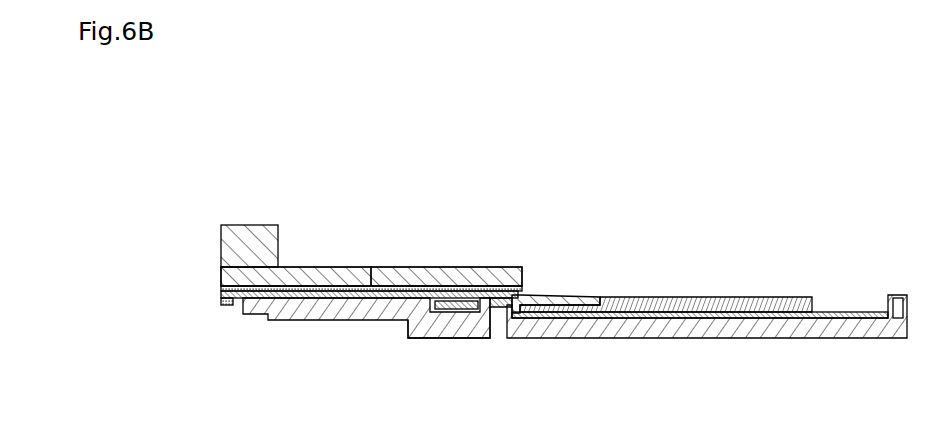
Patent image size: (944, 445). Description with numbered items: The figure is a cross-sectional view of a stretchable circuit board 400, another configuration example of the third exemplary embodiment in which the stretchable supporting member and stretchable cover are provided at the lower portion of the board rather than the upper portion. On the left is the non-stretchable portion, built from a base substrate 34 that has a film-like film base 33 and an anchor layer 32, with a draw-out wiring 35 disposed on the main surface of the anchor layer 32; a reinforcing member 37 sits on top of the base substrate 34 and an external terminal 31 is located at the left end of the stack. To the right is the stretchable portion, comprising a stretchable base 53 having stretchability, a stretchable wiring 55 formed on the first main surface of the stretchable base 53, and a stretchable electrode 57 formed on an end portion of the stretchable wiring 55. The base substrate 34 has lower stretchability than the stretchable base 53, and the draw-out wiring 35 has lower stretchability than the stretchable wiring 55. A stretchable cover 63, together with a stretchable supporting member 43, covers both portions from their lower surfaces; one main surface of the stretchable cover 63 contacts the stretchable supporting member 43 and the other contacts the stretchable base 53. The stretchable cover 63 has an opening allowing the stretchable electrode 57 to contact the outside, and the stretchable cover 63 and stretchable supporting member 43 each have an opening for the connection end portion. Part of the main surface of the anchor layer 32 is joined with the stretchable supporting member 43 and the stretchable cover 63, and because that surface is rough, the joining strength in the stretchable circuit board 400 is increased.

The stretchable circuit board 400 is at (582, 98).
The reinforcing member 37 is at (258, 225).
The base substrate 34 is at (440, 198).
The film base 33 is at (380, 268).
The anchor layer 32 is at (416, 268).
The external terminal 31 is at (235, 305).
The draw-out wiring 35 is at (328, 321).
The stretchable base 53 is at (706, 339).
The stretchable electrode 57 is at (856, 295).
The stretchable cover 63 is at (742, 297).
The stretchable wiring 55 is at (684, 297).
The stretchable supporting member 43 is at (576, 296).